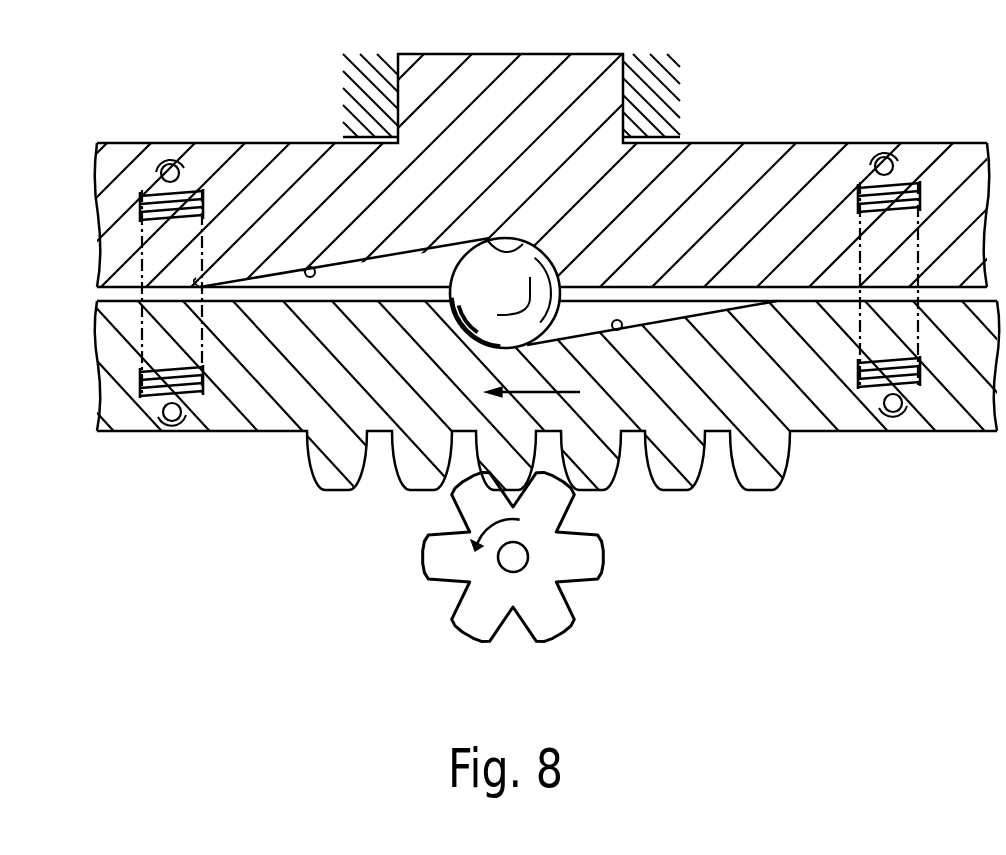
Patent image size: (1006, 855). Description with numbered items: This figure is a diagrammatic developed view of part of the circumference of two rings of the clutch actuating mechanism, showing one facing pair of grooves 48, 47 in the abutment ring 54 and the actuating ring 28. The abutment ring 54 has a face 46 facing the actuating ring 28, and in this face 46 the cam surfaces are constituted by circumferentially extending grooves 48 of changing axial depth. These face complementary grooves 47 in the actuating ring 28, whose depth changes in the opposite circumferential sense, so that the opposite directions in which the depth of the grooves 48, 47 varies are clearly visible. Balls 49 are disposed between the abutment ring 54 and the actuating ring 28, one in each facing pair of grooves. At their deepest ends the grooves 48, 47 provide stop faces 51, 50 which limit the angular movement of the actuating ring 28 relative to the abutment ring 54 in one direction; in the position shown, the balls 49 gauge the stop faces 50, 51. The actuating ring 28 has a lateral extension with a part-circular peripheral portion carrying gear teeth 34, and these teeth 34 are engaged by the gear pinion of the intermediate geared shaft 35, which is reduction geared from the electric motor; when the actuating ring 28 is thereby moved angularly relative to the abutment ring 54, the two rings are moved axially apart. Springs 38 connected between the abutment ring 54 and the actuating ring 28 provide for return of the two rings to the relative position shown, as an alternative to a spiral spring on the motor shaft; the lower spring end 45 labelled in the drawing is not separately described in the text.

The actuating ring 28 is at (237, 303).
The gear teeth 34 is at (762, 490).
The intermediate geared shaft 35 is at (486, 605).
The springs 38 is at (150, 195).
The spring 45 is at (181, 398).
The face 46 is at (648, 283).
The complementary grooves 47 is at (622, 330).
The grooves 48 is at (312, 267).
The balls 49 is at (530, 278).
The stop face 50 is at (468, 312).
The stop face 51 is at (490, 238).
The abutment ring 54 is at (262, 197).